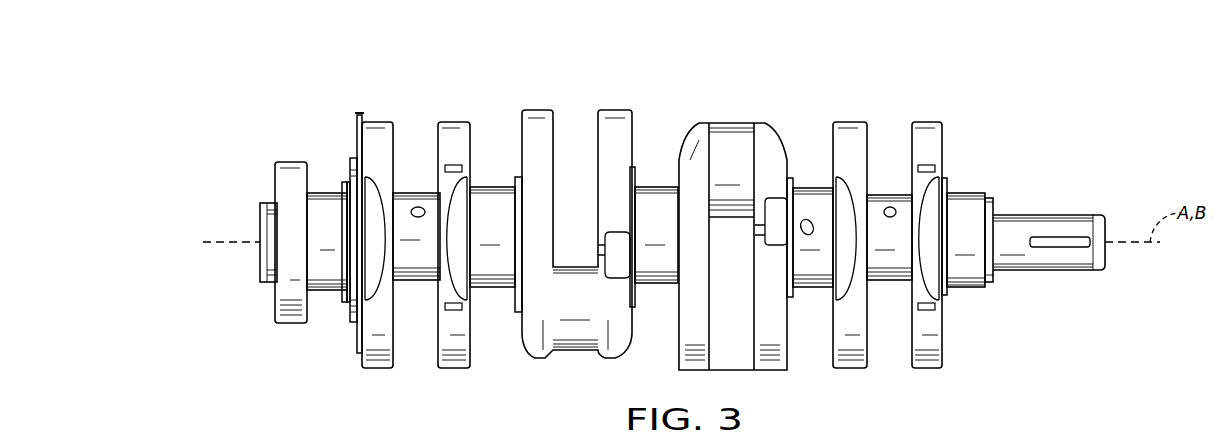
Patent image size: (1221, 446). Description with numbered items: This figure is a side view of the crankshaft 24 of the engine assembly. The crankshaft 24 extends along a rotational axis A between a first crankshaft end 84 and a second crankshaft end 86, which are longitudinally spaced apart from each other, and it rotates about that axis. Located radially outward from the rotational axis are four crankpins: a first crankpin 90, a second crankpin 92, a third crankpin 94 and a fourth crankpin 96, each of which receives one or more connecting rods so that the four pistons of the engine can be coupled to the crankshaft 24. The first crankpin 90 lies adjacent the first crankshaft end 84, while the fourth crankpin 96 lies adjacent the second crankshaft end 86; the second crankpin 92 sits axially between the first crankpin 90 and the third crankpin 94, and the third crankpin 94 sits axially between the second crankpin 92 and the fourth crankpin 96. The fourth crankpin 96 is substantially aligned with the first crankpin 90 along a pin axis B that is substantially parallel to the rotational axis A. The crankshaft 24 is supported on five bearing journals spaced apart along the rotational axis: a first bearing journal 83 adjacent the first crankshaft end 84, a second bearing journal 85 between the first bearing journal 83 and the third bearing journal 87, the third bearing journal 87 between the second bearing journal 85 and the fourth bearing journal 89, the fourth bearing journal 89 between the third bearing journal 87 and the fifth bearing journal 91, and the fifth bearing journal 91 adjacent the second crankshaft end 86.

The crankshaft 24 is at (714, 72).
The first bearing journal 83 is at (965, 290).
The first crankshaft end 84 is at (1107, 232).
The second bearing journal 85 is at (812, 187).
The second crankshaft end 86 is at (258, 228).
The third bearing journal 87 is at (665, 187).
The fourth bearing journal 89 is at (502, 183).
The first crankpin 90 is at (880, 190).
The fifth bearing journal 91 is at (335, 192).
The second crankpin 92 is at (730, 128).
The third crankpin 94 is at (573, 352).
The fourth crankpin 96 is at (427, 282).